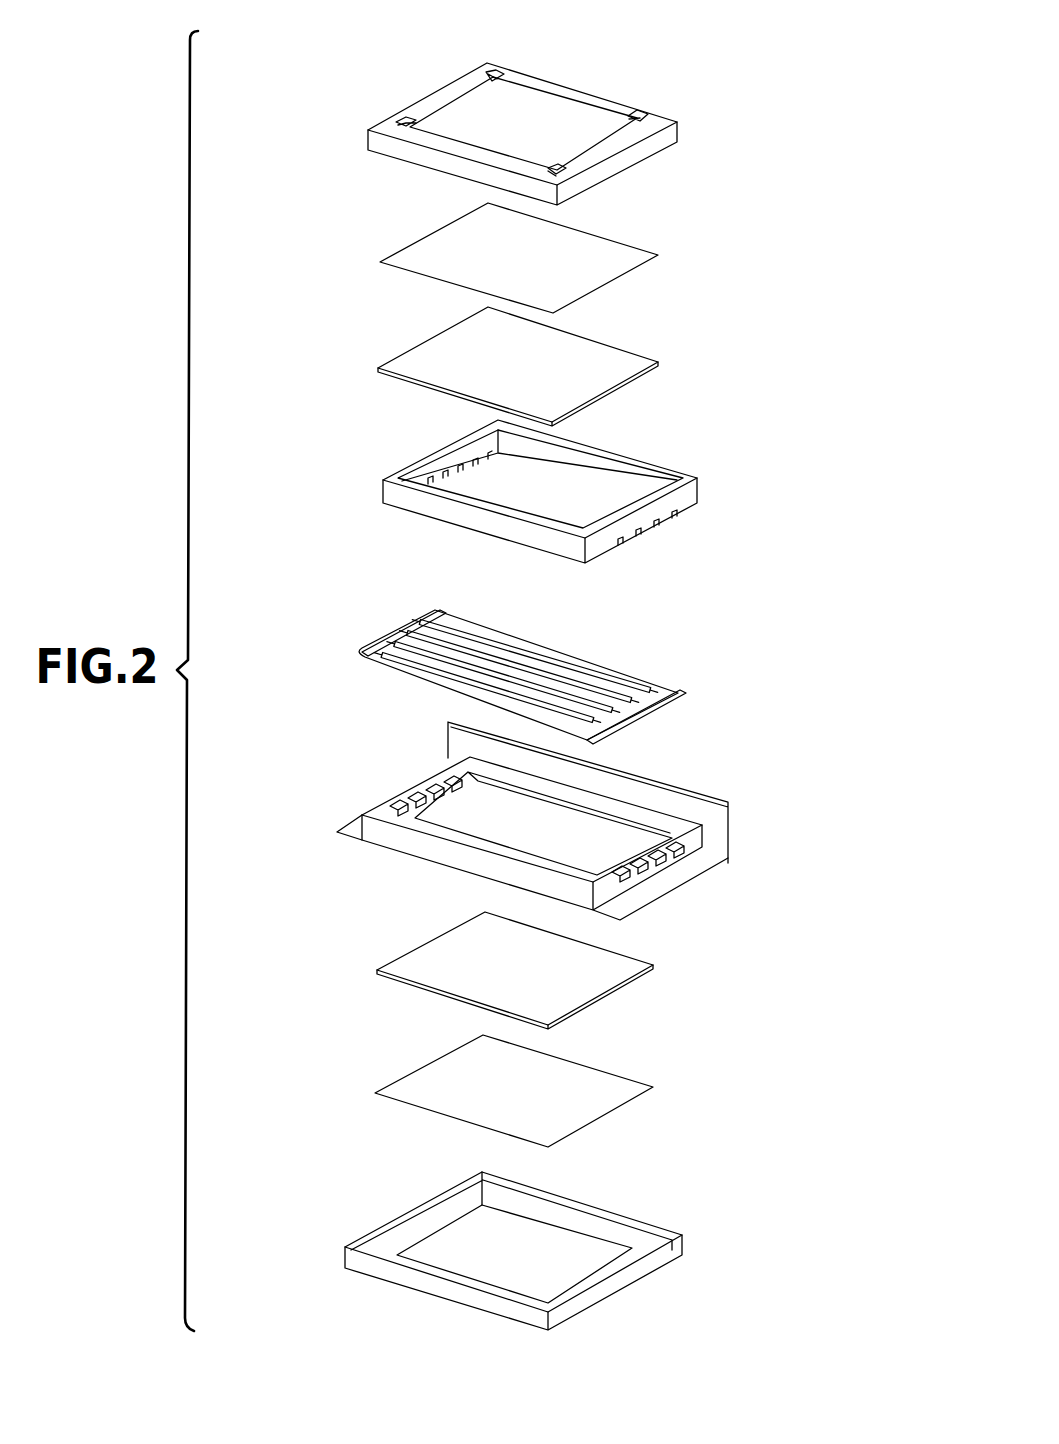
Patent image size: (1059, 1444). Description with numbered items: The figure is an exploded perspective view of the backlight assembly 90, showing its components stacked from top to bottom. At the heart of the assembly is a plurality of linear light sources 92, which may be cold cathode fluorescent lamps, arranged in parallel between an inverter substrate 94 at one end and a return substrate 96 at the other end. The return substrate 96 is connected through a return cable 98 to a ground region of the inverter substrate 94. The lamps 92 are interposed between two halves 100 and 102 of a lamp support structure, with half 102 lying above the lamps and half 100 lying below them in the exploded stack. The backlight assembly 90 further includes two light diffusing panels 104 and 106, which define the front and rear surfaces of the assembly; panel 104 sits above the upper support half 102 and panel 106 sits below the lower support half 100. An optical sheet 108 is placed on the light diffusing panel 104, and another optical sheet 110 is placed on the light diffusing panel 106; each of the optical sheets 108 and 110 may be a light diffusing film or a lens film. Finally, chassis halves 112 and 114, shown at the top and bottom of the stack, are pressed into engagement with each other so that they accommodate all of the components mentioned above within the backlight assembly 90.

The backlight assembly 90 is at (578, 62).
The linear light sources 92 is at (578, 667).
The inverter substrate 94 is at (663, 708).
The return substrate 96 is at (402, 632).
The return cable 98 is at (417, 687).
The lamp support structure half 100 is at (677, 888).
The lamp support structure half 102 is at (663, 522).
The light diffusing panel 104 is at (516, 380).
The light diffusing panel 106 is at (509, 987).
The optical sheet 108 is at (512, 277).
The optical sheet 110 is at (509, 1112).
The chassis half 112 is at (612, 100).
The chassis half 114 is at (633, 1228).